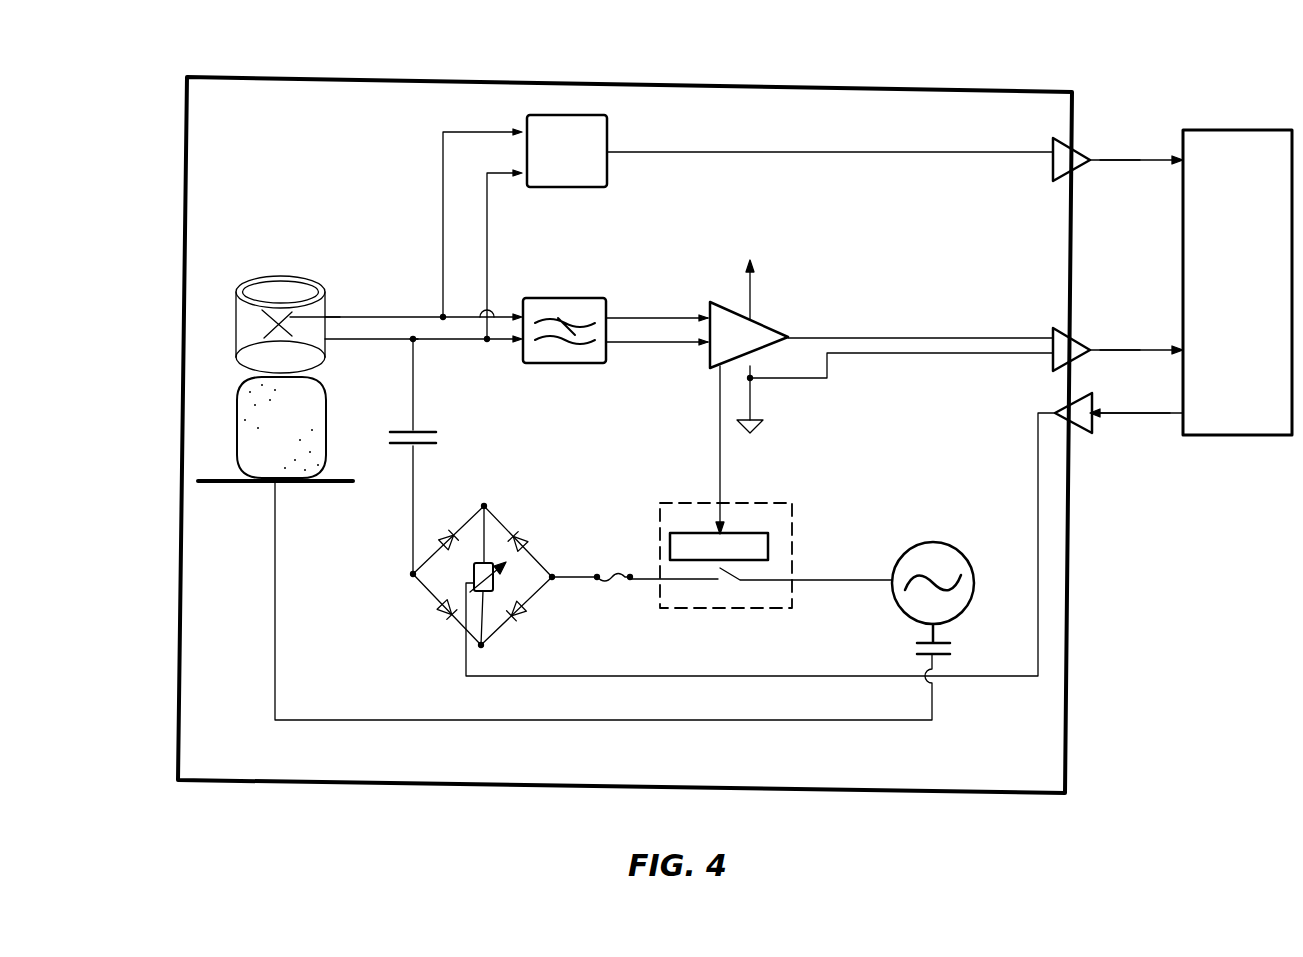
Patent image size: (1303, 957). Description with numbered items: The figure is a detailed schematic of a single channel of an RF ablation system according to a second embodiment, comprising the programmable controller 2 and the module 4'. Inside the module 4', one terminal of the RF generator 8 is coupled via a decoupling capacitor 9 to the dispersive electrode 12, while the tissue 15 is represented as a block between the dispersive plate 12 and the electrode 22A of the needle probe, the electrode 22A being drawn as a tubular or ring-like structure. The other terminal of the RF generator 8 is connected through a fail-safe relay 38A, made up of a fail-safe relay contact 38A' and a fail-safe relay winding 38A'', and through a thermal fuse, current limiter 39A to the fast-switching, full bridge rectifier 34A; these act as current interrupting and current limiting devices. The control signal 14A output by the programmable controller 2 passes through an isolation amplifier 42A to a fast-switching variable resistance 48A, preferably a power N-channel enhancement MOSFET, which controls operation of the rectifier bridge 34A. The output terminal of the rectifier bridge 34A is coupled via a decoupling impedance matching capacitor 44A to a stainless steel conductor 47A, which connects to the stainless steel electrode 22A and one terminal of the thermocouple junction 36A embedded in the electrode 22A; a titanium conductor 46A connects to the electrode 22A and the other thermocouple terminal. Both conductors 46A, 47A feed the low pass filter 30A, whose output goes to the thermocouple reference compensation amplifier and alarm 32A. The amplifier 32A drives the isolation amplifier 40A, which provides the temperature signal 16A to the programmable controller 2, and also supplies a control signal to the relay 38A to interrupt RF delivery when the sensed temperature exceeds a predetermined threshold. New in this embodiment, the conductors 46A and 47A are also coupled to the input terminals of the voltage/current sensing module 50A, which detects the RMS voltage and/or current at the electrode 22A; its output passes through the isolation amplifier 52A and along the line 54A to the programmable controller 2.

The module 4' is at (625, 407).
The electrode 22A is at (238, 282).
The thermocouple junction 36A is at (277, 323).
The titanium conductor 46A is at (345, 316).
The stainless steel conductor 47A is at (410, 343).
The tissue 15 is at (243, 413).
The dispersive electrode 12 is at (250, 483).
The decoupling impedance matching capacitor 44A is at (433, 432).
The voltage/current sensing module 50A is at (610, 132).
The low pass filter 30A is at (566, 298).
The thermocouple reference compensation amplifier and alarm 32A is at (760, 318).
The isolation amplifier 52A is at (1053, 153).
The output line to controller 54A is at (1118, 160).
The isolation amplifier 40A is at (1053, 337).
The temperature signal 16A is at (1118, 350).
The isolation amplifier 42A is at (1055, 400).
The control signal 14A is at (1157, 417).
The programmable controller 2 is at (1183, 205).
The fail-safe relay 38A is at (756, 508).
The fail-safe relay contact 38A' is at (776, 509).
The fail-safe relay winding 38A'' is at (761, 620).
The thermal fuse, current limiter 39A is at (612, 577).
The fast-switching, full bridge rectifier 34A is at (495, 500).
The fast-switching variable resistance 48A is at (493, 583).
The RF generator 8 is at (960, 552).
The decoupling capacitor 9 is at (923, 636).